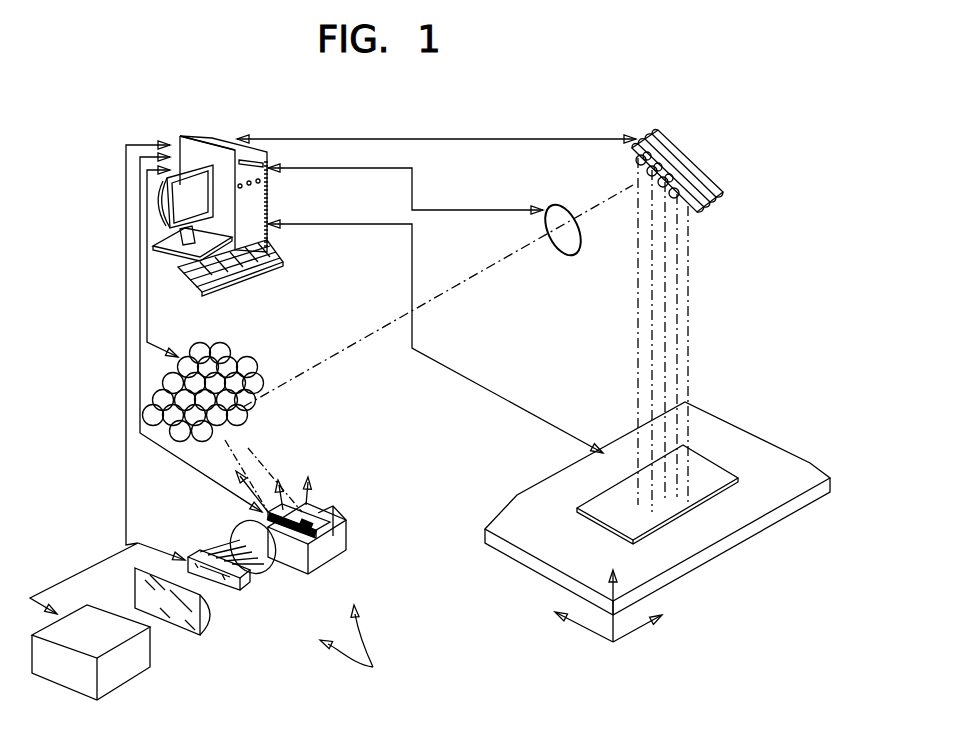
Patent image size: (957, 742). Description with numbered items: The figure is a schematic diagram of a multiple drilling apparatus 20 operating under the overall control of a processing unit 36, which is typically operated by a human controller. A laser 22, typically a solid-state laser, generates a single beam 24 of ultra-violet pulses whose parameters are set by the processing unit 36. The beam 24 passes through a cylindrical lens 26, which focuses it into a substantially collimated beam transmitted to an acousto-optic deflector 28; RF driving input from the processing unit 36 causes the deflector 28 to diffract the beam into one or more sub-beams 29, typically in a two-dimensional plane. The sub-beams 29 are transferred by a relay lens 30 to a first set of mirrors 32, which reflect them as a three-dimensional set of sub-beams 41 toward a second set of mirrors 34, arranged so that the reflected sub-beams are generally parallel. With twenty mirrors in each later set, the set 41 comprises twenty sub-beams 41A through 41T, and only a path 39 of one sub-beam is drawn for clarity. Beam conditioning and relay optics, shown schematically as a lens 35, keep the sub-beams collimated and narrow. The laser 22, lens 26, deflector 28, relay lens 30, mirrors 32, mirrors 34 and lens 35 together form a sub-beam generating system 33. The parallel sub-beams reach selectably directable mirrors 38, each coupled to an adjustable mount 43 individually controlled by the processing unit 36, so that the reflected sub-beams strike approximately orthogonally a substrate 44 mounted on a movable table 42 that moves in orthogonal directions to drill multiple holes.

The multiple drilling apparatus 20 is at (802, 596).
The laser 22 is at (133, 672).
The single beam 24 is at (133, 613).
The cylindrical lens 26 is at (212, 627).
The acousto-optic deflector 28 is at (250, 588).
The sub-beams 29 is at (222, 547).
The relay lens 30 is at (238, 525).
The first set of mirrors 32 is at (328, 558).
The sub-beam generating system 33 is at (361, 644).
The second set of mirrors 34 is at (244, 340).
The lens 35 is at (553, 212).
The processing unit 36 is at (215, 138).
The selectably directable mirrors 38 is at (628, 222).
The path 39 is at (336, 354).
The three-dimensional set of sub-beams 41 is at (332, 516).
The sub-beam 41A is at (295, 476).
The sub-beam 41T is at (334, 503).
The movable table 42 is at (680, 522).
The adjustable mount 43 is at (712, 150).
The substrate 44 is at (708, 468).